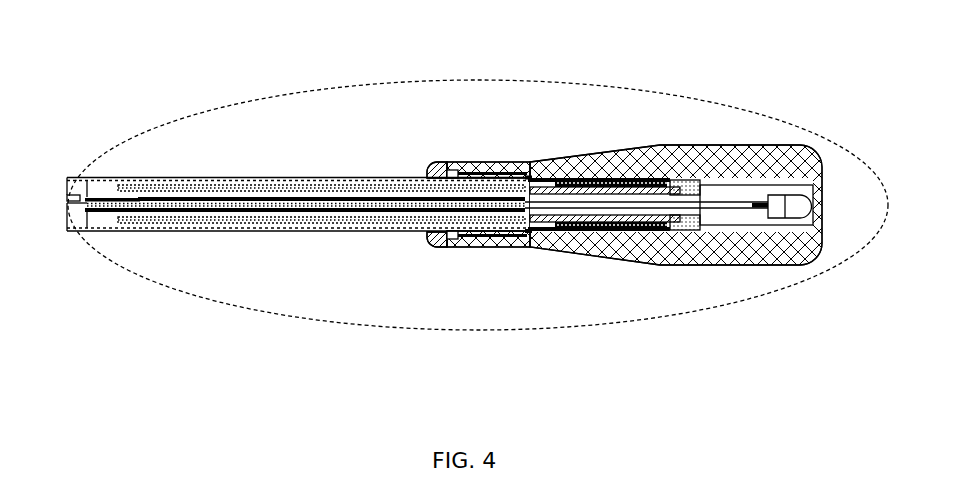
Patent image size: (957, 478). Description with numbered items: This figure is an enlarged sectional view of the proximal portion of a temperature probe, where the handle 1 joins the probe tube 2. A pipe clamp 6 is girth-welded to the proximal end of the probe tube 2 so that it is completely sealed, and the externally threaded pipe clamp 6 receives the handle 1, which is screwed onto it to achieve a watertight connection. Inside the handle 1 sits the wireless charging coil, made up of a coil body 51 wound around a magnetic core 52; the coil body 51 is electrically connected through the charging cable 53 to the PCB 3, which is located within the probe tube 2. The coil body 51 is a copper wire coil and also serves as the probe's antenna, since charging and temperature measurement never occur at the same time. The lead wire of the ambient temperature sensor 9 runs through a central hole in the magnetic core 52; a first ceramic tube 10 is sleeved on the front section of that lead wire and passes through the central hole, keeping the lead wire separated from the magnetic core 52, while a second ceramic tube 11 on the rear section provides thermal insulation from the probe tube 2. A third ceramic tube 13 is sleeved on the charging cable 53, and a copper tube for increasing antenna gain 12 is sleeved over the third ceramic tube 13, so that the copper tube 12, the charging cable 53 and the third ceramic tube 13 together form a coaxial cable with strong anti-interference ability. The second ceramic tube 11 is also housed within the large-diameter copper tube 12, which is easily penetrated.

The handle 1 is at (692, 150).
The probe tube 2 is at (120, 178).
The PCB 3 is at (103, 203).
The pipe clamp 6 is at (438, 162).
The ambient temperature sensor 9 is at (790, 203).
The first ceramic tube 10 is at (730, 205).
The second ceramic tube 11 is at (210, 218).
The copper tube for increasing antenna gain 12 is at (150, 217).
The third ceramic tube 13 is at (230, 192).
The coil body 51 is at (572, 178).
The magnetic core 52 is at (602, 180).
The charging cable 53 is at (537, 178).